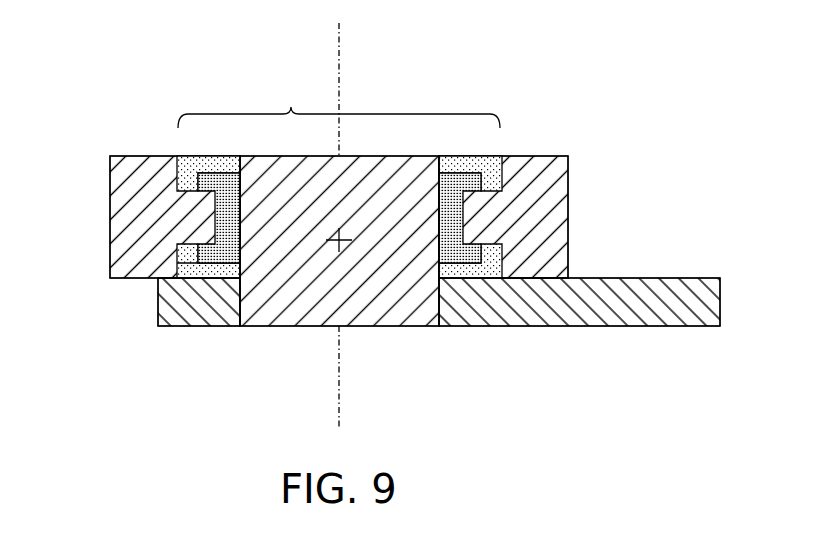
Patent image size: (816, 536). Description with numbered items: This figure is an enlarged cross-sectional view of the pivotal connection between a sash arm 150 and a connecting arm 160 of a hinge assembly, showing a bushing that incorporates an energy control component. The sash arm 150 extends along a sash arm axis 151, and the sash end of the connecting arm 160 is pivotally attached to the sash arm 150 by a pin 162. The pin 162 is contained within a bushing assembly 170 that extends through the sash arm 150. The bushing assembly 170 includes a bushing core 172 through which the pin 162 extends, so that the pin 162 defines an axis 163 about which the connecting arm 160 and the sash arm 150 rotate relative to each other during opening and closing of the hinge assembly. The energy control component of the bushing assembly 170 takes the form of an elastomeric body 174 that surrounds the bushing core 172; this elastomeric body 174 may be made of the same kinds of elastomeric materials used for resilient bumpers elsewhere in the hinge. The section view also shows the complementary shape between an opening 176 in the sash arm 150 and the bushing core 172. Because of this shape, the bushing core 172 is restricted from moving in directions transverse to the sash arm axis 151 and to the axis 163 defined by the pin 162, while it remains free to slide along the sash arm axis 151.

The sash arm 150 is at (564, 226).
The sash arm axis 151 is at (338, 242).
The connecting arm 160 is at (588, 320).
The pin 162 is at (412, 327).
The axis 163 is at (340, 68).
The bushing assembly 170 is at (339, 100).
The bushing core 172 is at (240, 186).
The elastomeric body 174 is at (200, 156).
The opening 176 is at (178, 177).